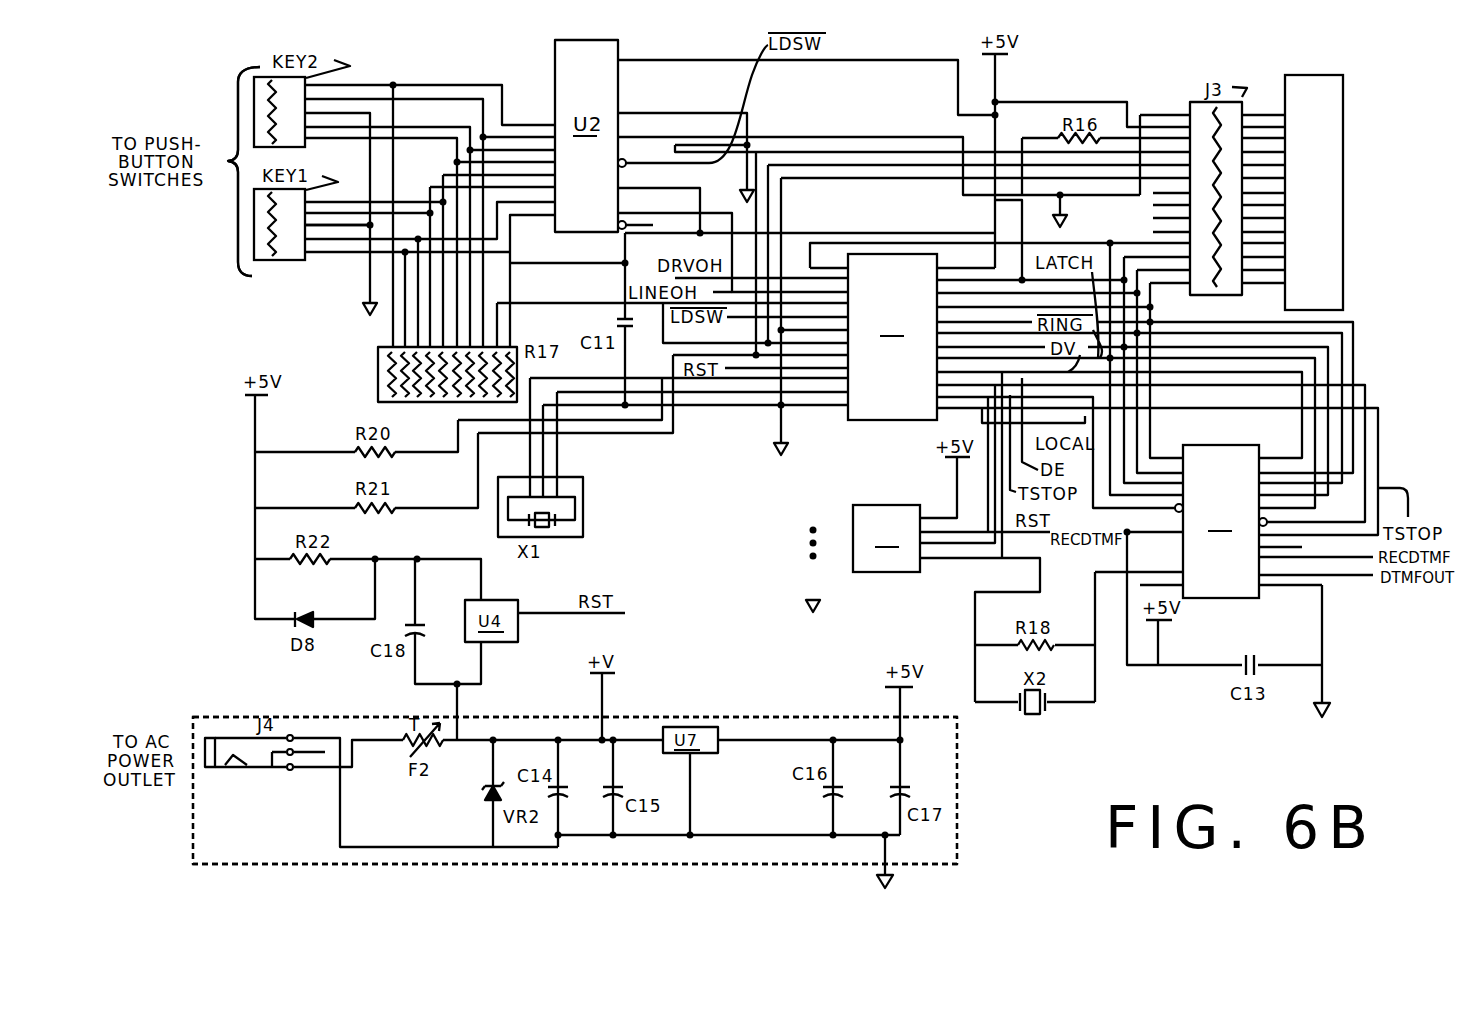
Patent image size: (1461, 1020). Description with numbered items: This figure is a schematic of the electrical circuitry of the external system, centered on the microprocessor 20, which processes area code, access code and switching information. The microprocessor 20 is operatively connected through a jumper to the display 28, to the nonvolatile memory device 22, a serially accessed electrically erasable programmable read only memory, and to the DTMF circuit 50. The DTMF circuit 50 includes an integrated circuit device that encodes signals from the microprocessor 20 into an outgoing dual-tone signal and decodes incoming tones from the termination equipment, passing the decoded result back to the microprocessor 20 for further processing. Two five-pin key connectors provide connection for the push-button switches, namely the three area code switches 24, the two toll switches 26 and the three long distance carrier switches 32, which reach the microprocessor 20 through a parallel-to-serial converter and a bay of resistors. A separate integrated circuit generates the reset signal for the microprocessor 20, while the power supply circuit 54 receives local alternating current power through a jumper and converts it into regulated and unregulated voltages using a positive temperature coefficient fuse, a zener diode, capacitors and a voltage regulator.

The microprocessor 20 is at (862, 420).
The nonvolatile memory device 22 is at (868, 505).
The display 28 is at (1343, 108).
The DTMF circuit 50 is at (1225, 598).
The power supply circuit 54 is at (613, 864).
The area code switches 24 is at (216, 144).
The toll switches 26 is at (279, 224).
The long distance carrier switches 32 is at (194, 171).